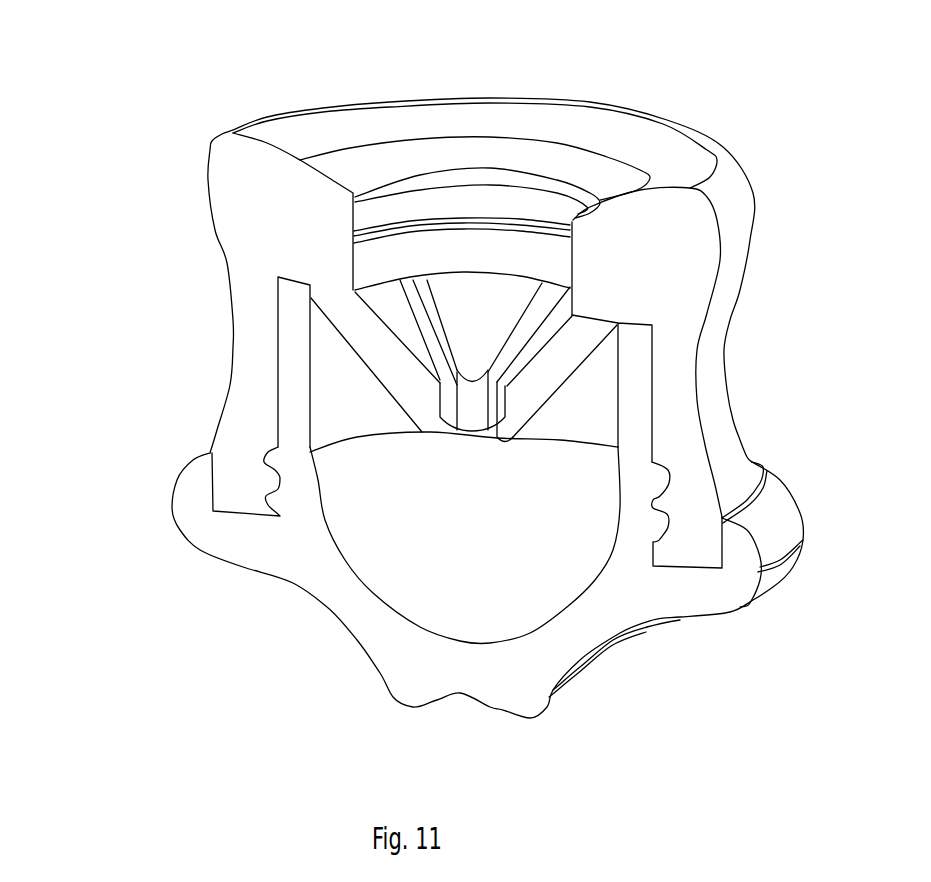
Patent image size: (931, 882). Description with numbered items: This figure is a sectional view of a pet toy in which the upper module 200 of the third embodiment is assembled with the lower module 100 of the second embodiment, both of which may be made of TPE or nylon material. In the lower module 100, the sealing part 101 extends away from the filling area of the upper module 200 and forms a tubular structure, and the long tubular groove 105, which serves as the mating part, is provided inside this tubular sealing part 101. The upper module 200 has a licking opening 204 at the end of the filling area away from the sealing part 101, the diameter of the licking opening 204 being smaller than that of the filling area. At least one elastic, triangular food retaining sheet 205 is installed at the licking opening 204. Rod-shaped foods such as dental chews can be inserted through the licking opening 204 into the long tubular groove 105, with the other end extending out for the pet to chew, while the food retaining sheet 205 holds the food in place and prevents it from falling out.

The lower module 100 is at (342, 582).
The sealing part 101 is at (637, 412).
The long tubular groove 105 is at (533, 528).
The upper module 200 is at (257, 208).
The licking opening 204 is at (433, 207).
The food retaining sheet 205 is at (382, 345).